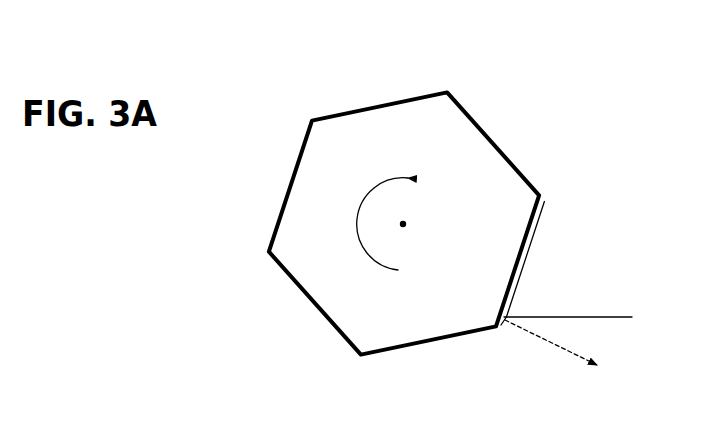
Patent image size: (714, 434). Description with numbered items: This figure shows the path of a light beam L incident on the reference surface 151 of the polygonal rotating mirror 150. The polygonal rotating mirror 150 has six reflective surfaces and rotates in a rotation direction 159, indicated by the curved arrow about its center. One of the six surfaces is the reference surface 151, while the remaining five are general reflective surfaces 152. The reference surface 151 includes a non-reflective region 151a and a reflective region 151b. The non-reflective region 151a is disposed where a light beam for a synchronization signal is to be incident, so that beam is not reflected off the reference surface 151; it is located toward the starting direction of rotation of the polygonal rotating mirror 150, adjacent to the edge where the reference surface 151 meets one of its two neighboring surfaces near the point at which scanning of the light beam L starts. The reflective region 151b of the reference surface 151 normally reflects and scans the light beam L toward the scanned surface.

The polygonal rotating mirror 150 is at (512, 100).
The reflective surfaces 152 is at (380, 103).
The rotation direction 159 is at (365, 195).
The reference surface 151 is at (532, 222).
The non-reflective region 151a is at (508, 322).
The reflective region 151b is at (528, 255).
The light beam L is at (610, 318).